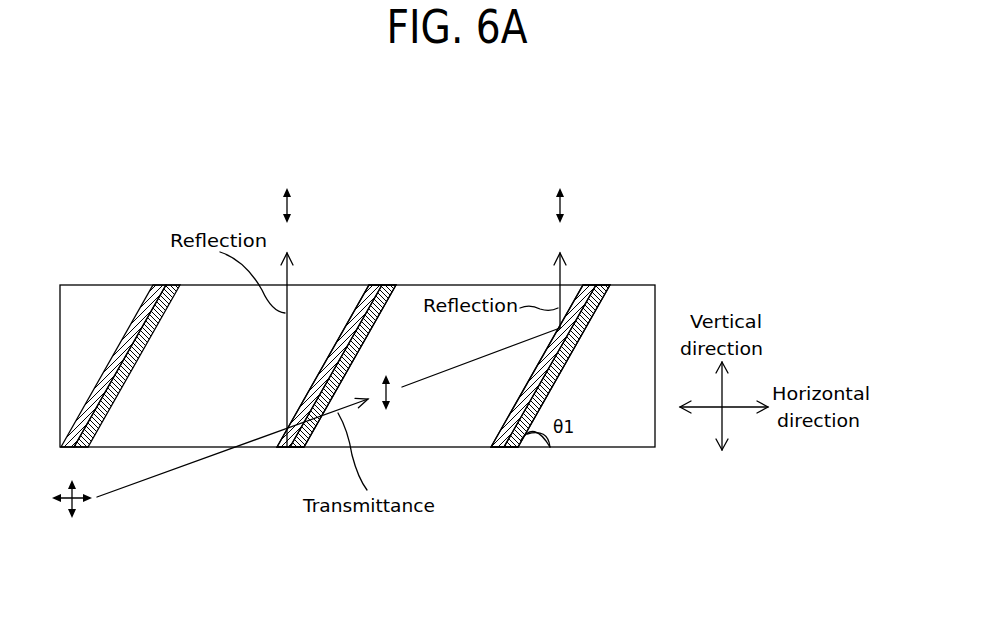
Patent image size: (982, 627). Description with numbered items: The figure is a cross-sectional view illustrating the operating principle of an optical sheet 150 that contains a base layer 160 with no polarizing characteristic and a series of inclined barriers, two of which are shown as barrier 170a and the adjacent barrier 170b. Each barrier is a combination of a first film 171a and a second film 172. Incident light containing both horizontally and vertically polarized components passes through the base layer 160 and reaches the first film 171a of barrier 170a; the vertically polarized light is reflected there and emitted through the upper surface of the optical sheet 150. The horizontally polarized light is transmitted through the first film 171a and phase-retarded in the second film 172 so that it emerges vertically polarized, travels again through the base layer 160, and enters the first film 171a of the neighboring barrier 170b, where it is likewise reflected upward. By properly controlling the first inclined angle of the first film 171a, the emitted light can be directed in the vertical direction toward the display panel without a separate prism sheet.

The optical sheet 150 is at (447, 175).
The base layer 160 is at (103, 300).
The barrier 170a is at (367, 216).
The barrier 170b is at (585, 216).
The first film 171a is at (371, 285).
The second film 172 is at (391, 285).